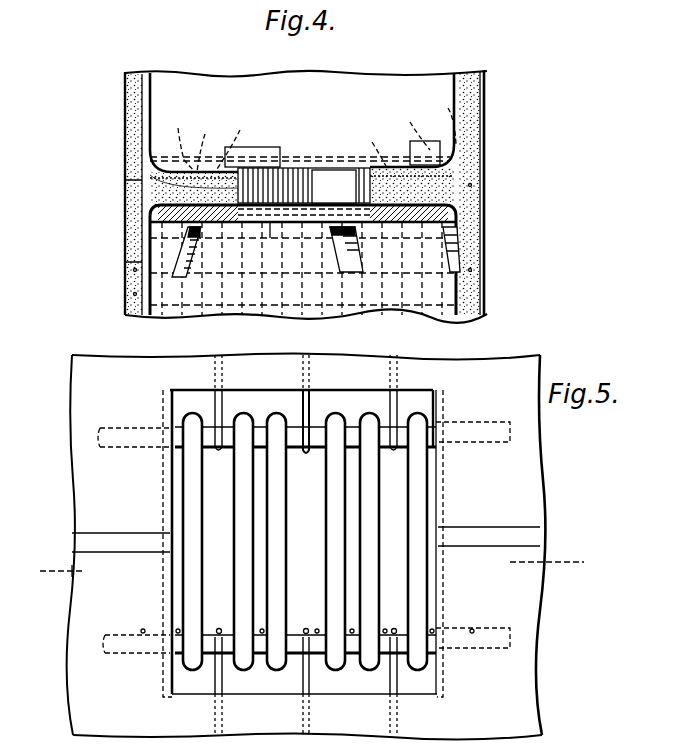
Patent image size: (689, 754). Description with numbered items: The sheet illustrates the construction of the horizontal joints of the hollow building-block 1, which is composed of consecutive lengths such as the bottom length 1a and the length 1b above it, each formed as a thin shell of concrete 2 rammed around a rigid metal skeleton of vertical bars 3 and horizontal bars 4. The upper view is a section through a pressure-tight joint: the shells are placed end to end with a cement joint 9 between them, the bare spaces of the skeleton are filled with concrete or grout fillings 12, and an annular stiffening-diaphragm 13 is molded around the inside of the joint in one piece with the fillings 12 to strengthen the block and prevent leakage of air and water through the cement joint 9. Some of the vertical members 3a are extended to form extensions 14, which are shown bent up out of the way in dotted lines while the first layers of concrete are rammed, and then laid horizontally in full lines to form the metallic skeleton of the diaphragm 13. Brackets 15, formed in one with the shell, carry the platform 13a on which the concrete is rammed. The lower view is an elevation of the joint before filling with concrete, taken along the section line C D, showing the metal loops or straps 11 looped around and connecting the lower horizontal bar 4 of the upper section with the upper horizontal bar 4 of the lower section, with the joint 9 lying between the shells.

In FIG. 4, the hollow building-block 1 is at (484, 252).
In FIG. 5, the bottom length of the building-block 1a is at (306, 681).
In FIG. 5, the length of the building-block 1b is at (304, 401).
In FIG. 4, the thin shell of concrete 2 is at (484, 222).
In FIG. 5, the thin shell of concrete 2 is at (306, 546).
In FIG. 4, the vertical bars 3 is at (125, 251).
In FIG. 5, the vertical bars 3 is at (224, 402).
In FIG. 4, the vertical members of the shell 3a is at (125, 292).
In FIG. 5, the vertical members of the shell 3a is at (311, 402).
In FIG. 4, the horizontal bars 4 is at (266, 274).
In FIG. 5, the horizontal bars 4 is at (318, 450).
In FIG. 5, the grout or cement joint 9 is at (532, 531).
In FIG. 4, the metal loops or straps 11 is at (150, 207).
In FIG. 5, the metal loops or straps 11 is at (238, 540).
In FIG. 4, the concrete or grout fillings 12 is at (268, 147).
In FIG. 4, the annular stiffening-diaphragm 13 is at (304, 185).
In FIG. 4, the platform 13a is at (271, 232).
In FIG. 4, the extensions of the vertical members 14 is at (309, 132).
In FIG. 4, the brackets 15 is at (195, 266).
In FIG. 5, the section line C D C is at (51, 572).
In FIG. 5, the section line C D is at (553, 562).